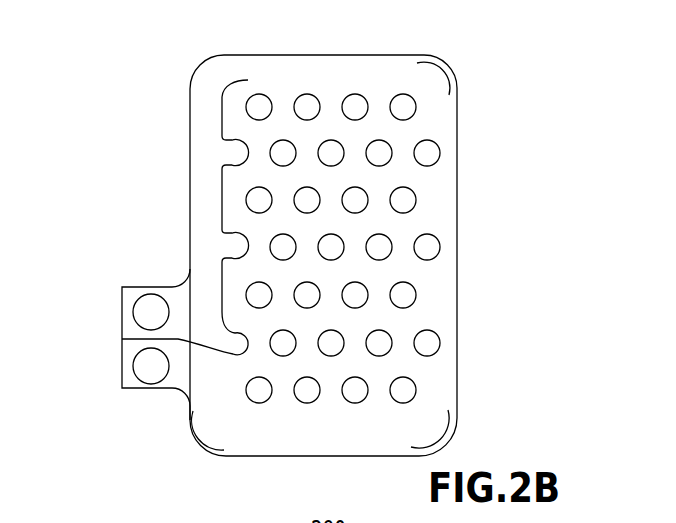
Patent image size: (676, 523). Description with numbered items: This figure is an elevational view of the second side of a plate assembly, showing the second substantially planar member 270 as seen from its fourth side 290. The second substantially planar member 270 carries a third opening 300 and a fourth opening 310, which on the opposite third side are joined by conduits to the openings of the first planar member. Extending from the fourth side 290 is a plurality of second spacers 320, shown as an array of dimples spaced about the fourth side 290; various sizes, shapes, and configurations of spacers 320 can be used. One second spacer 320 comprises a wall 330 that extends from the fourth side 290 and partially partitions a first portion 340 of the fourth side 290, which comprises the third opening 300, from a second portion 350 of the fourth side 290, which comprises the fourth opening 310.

The second substantially planar member 270 is at (216, 56).
The fourth side 290 is at (326, 64).
The first portion 340 is at (207, 149).
The wall 330 is at (221, 200).
The second spacer 320 is at (267, 240).
The second portion 350 is at (201, 391).
The third opening 300 is at (143, 313).
The fourth opening 310 is at (143, 365).